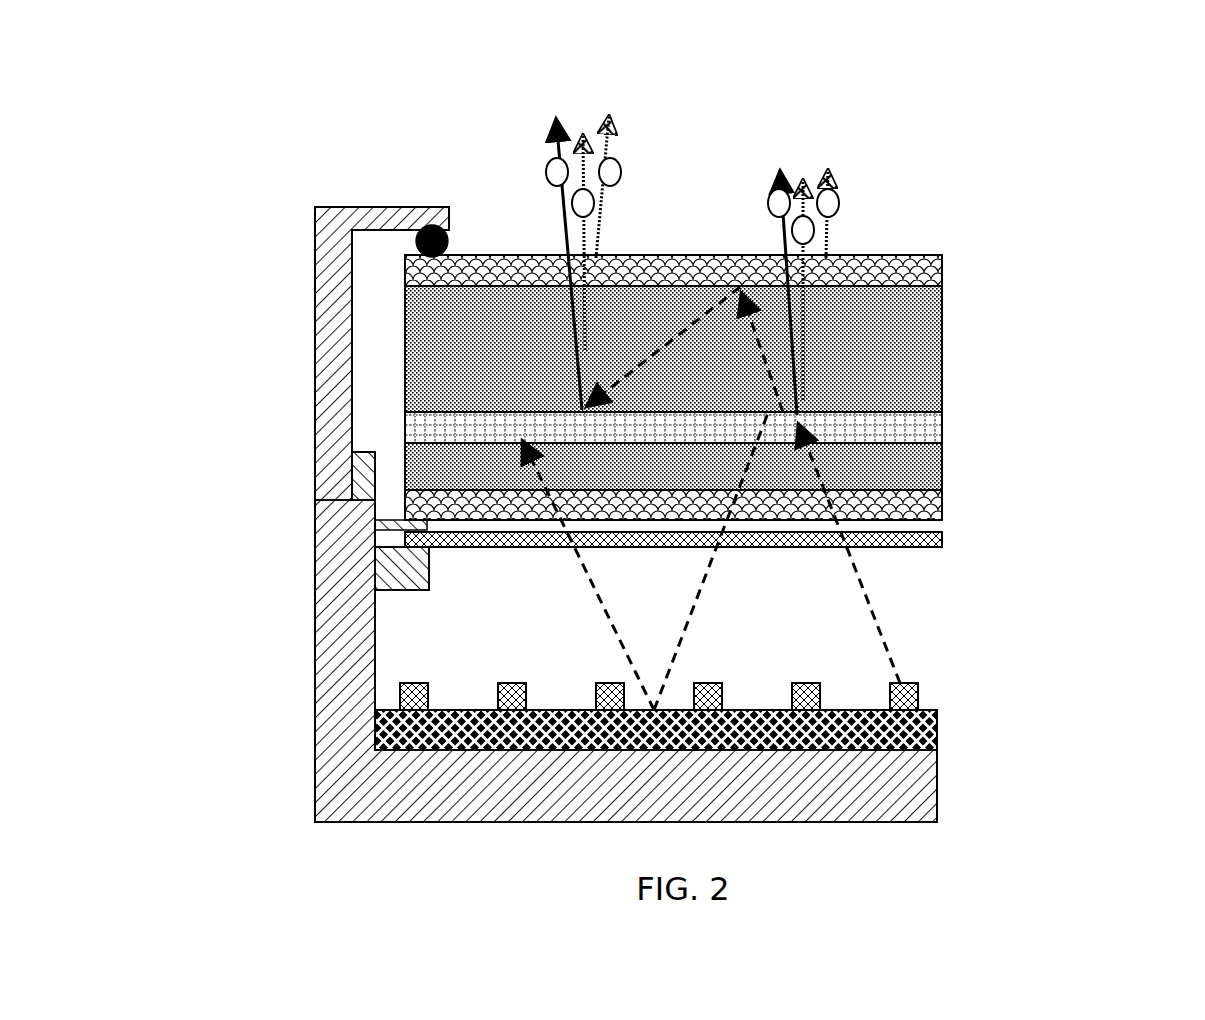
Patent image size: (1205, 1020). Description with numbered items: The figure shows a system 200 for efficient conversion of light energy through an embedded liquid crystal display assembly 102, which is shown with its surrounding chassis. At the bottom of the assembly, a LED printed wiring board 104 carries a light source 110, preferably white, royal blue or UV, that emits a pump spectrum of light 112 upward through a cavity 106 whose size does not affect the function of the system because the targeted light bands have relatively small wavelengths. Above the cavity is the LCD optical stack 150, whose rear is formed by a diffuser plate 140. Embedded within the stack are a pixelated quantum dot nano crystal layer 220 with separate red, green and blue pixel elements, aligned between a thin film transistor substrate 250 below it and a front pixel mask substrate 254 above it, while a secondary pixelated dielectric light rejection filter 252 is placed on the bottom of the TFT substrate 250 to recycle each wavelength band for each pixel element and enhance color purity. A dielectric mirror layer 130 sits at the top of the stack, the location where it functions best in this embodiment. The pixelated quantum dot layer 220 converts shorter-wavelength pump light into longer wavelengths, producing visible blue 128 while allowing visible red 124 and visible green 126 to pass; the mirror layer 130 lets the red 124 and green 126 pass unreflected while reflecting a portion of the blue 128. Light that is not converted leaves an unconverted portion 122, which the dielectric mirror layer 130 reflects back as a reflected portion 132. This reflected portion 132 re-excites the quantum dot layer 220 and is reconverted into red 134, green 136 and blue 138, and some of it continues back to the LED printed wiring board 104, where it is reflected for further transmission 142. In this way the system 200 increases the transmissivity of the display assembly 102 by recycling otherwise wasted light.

The system 200 is at (100, 132).
The display assembly 102 is at (315, 588).
The LED printed wiring board 104 is at (937, 733).
The cavity 106 is at (784, 658).
The light source 110 is at (511, 683).
The pump spectrum of light 112 is at (897, 625).
The unconverted portion 122 is at (776, 327).
The visible red 124 is at (779, 140).
The visible green 126 is at (803, 150).
The visible blue 128 is at (829, 148).
The dielectric mirror layer 130 is at (942, 270).
The reflected portion 132 is at (770, 386).
The red 134 is at (538, 136).
The green 136 is at (576, 120).
The blue 138 is at (602, 101).
The diffuser plate 140 is at (942, 538).
The further transmission 142 is at (603, 657).
The LCD optical stack 150 is at (799, 381).
The pixelated quantum dot nano crystal layer 220 is at (942, 428).
The TFT substrate 250 is at (965, 445).
The pixelated dielectric light rejection filter 252 is at (942, 505).
The front pixel mask substrate 254 is at (967, 287).